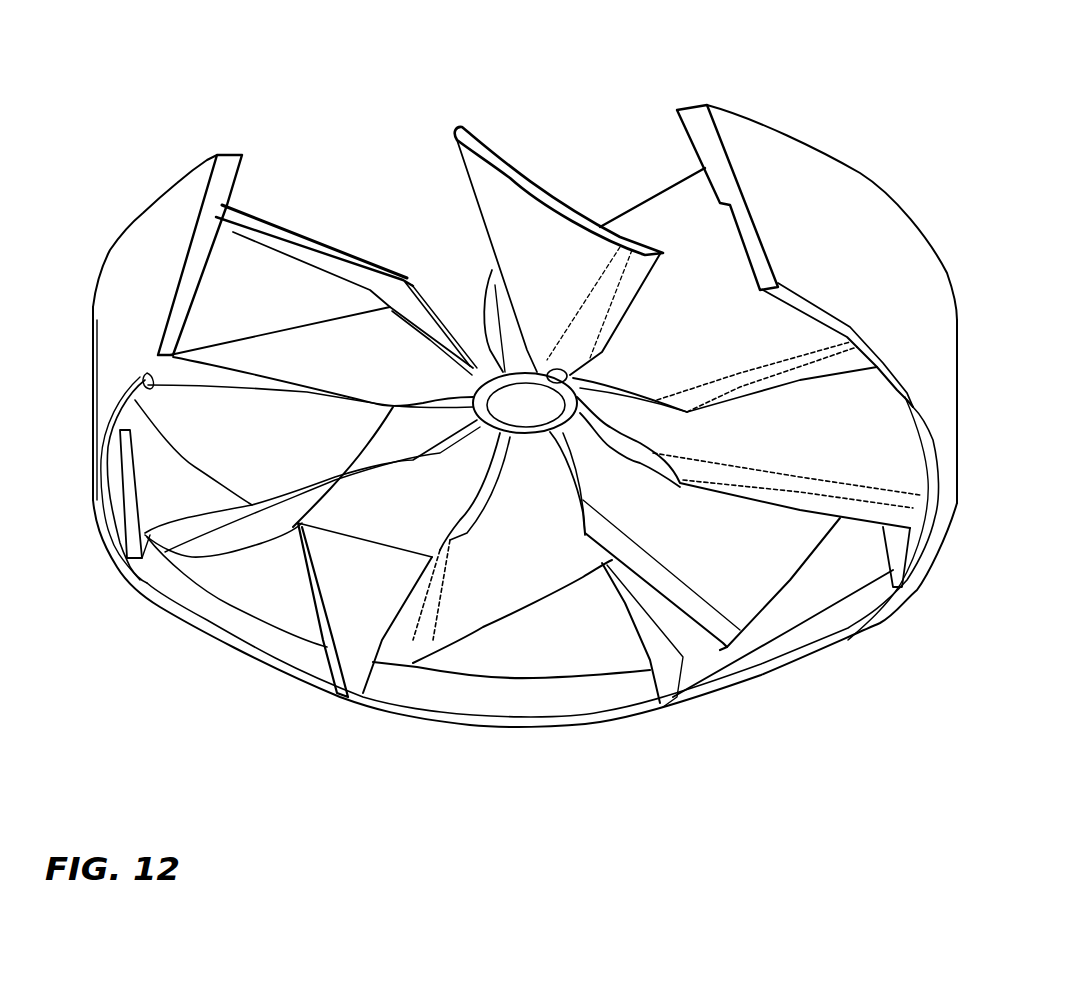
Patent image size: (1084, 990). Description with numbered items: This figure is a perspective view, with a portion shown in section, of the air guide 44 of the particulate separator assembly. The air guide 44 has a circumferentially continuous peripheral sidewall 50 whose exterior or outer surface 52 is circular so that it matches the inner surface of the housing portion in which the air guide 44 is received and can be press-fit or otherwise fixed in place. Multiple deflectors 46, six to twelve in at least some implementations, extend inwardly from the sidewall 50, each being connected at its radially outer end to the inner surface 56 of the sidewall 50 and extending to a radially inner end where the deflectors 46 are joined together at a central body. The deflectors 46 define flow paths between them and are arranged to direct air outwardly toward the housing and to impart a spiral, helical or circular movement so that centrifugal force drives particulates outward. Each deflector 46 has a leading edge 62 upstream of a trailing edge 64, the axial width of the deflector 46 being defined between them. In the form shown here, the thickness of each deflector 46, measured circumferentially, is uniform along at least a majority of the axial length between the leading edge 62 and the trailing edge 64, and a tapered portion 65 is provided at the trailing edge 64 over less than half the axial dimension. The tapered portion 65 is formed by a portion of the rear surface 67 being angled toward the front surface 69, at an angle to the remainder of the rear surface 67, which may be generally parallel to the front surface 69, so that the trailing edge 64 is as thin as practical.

The air guide 44 is at (663, 735).
The deflectors 46 is at (357, 232).
The peripheral sidewall 50 is at (187, 627).
The outer surface 52 is at (140, 233).
The inner surface 56 is at (293, 605).
The leading edge 62 is at (277, 218).
The trailing edge 64 is at (363, 403).
The tapered portion 65 is at (635, 260).
The rear surface 67 is at (532, 233).
The front surface 69 is at (300, 357).